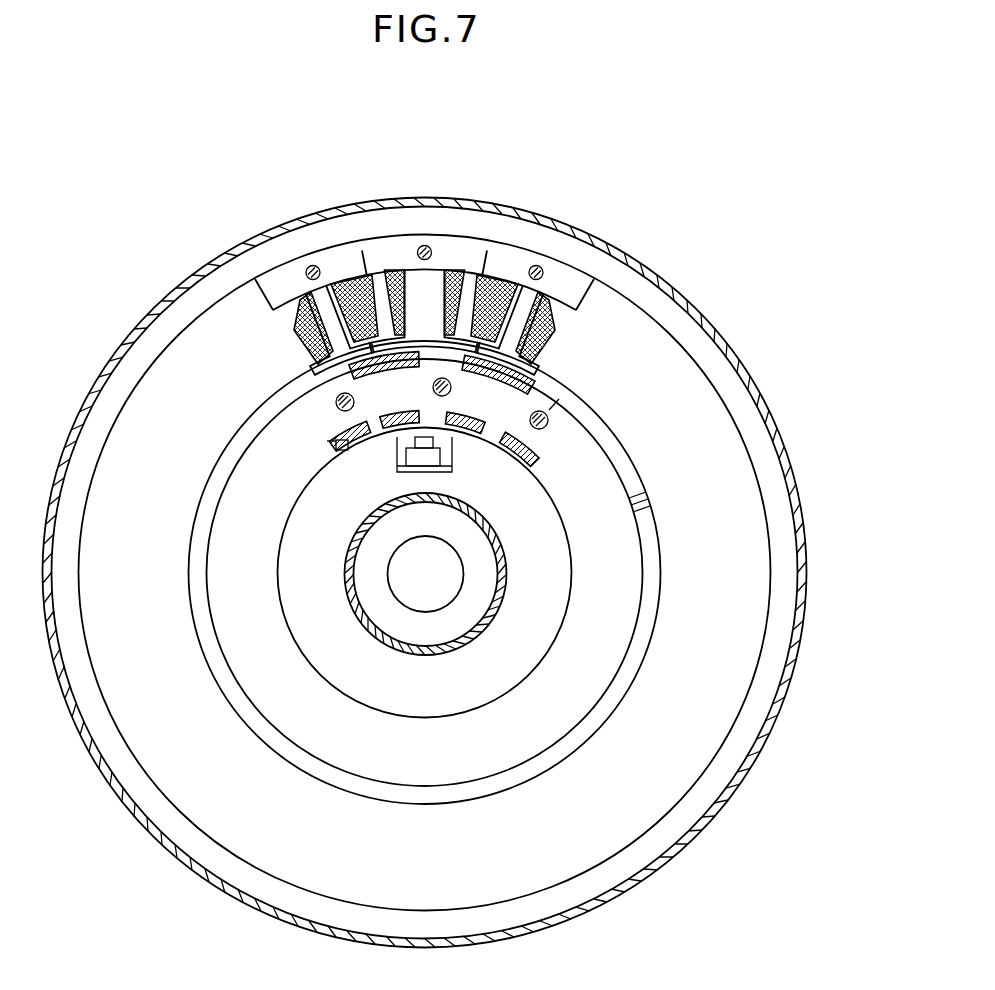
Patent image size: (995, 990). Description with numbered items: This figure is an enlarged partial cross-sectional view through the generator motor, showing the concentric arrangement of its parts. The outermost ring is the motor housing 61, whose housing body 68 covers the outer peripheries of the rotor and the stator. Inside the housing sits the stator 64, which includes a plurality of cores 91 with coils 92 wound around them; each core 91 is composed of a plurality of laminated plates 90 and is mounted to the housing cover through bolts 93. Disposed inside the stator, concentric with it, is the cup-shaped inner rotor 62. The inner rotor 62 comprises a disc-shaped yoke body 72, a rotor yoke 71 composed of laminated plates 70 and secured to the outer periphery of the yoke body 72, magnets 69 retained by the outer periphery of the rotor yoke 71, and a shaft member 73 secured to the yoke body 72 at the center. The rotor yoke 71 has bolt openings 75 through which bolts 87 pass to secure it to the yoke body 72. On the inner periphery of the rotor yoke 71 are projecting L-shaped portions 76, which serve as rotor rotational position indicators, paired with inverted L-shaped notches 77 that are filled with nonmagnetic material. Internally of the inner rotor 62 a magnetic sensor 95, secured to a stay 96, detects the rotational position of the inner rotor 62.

The motor housing 61 is at (667, 282).
The inner rotor 62 is at (652, 588).
The stator 64 is at (327, 371).
The housing body 68 is at (693, 308).
The magnets 69 is at (541, 374).
The laminated plates 70 is at (650, 498).
The rotor yoke 71 is at (602, 486).
The yoke body 72 is at (553, 543).
The shaft member 73 is at (508, 580).
The bolt openings 75 is at (553, 408).
The L-shaped portions 76 is at (352, 448).
The inverted L-shaped notches 77 is at (385, 437).
The bolts 87 is at (552, 428).
The laminated plates 90 is at (329, 246).
The cores 91 is at (316, 293).
The coils 92 is at (289, 333).
The bolts 93 is at (311, 265).
The magnetic sensor 95 is at (452, 462).
The stay 96 is at (459, 470).